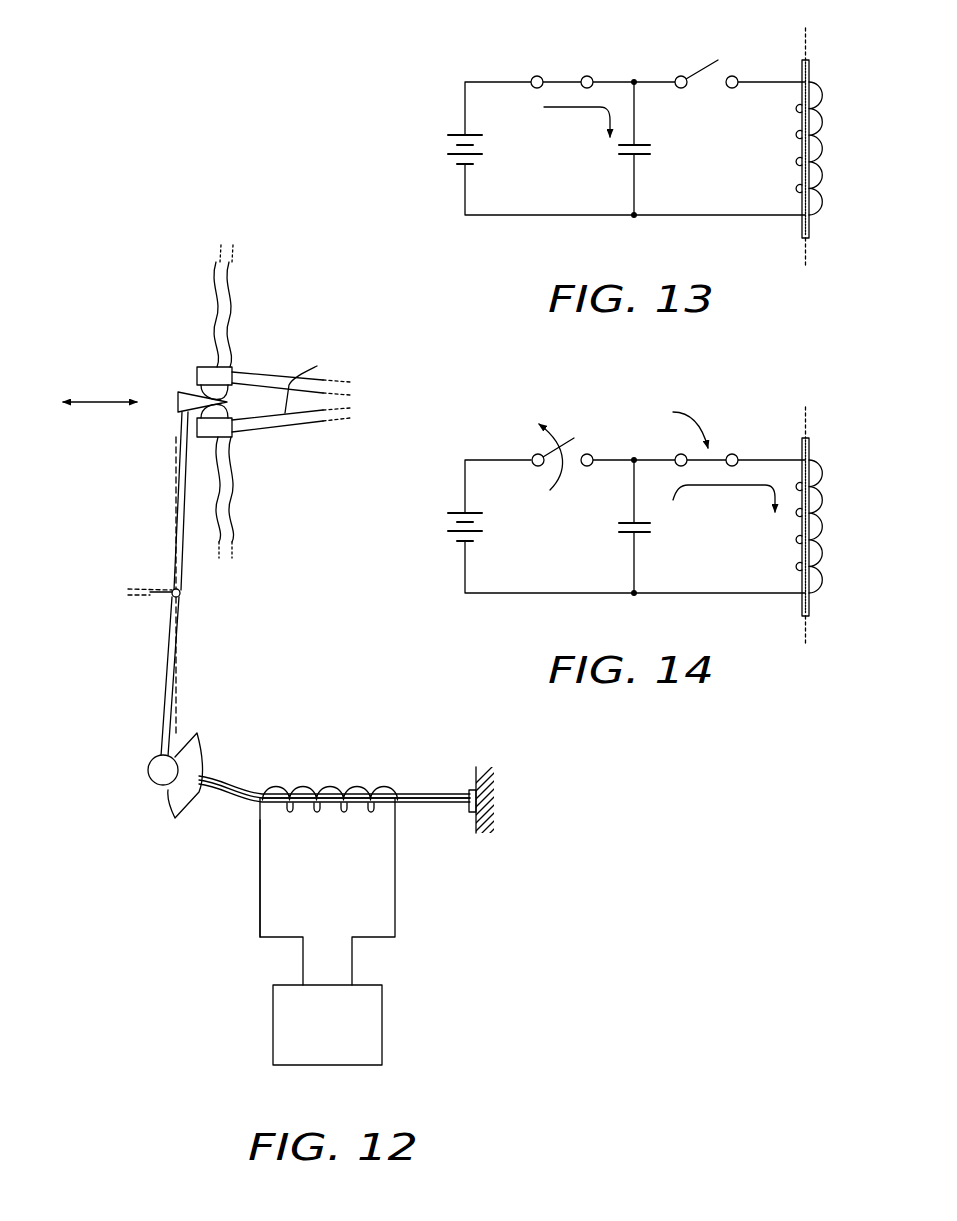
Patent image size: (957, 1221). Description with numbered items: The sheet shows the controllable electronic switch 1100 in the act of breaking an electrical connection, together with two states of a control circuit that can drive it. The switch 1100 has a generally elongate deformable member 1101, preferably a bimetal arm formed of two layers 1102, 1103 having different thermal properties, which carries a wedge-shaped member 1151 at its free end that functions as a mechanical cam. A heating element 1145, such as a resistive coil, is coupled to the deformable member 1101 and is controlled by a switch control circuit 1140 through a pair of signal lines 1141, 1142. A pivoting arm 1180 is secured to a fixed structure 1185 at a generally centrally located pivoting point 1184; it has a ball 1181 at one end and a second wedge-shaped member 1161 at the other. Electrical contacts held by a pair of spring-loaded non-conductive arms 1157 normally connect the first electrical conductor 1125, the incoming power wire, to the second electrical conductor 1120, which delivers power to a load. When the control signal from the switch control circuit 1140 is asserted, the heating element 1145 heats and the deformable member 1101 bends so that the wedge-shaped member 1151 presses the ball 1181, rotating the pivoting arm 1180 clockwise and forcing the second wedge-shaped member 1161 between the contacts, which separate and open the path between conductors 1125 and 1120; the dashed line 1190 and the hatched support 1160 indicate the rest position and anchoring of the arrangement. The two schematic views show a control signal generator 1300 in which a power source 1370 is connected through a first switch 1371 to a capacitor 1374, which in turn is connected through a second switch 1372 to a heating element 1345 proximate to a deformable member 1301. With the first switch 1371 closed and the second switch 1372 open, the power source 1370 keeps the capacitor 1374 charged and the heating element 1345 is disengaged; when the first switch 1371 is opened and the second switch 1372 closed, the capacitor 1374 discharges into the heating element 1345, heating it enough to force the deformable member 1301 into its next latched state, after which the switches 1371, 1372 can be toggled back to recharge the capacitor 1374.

In FIG. 12, the controllable electronic switch 1100 is at (303, 282).
In FIG. 12, the first electrical conductor 1125 is at (214, 292).
In FIG. 12, the second electrical conductor 1120 is at (229, 477).
In FIG. 12, the non-conductive arms 1157 is at (262, 377).
In FIG. 12, the second wedge-shaped member 1161 is at (178, 392).
In FIG. 12, the rest position line 1190 is at (175, 466).
In FIG. 12, the pivoting arm 1180 is at (182, 565).
In FIG. 12, the pivoting point 1184 is at (181, 594).
In FIG. 12, the fixed structure 1185 is at (152, 600).
In FIG. 12, the ball 1181 is at (148, 764).
In FIG. 12, the wedge-shaped member 1151 is at (171, 806).
In FIG. 12, the deformable member 1101 is at (420, 786).
In FIG. 12, the layer 1103 is at (417, 806).
In FIG. 12, the layer 1102 is at (443, 794).
In FIG. 12, the heating element 1145 is at (270, 788).
In FIG. 12, the fixed wall 1160 is at (476, 828).
In FIG. 12, the signal line 1141 is at (395, 913).
In FIG. 12, the signal line 1142 is at (260, 921).
In FIG. 12, the switch control circuit 1140 is at (382, 1026).
In FIG. 13, the control signal generator 1300 is at (481, 53).
In FIG. 14, the control signal generator 1300 is at (481, 431).
In FIG. 13, the power source 1370 is at (457, 131).
In FIG. 14, the power source 1370 is at (457, 508).
In FIG. 13, the first switch 1371 is at (560, 78).
In FIG. 14, the first switch 1371 is at (553, 436).
In FIG. 13, the second switch 1372 is at (702, 66).
In FIG. 14, the second switch 1372 is at (718, 457).
In FIG. 13, the capacitor 1374 is at (645, 160).
In FIG. 14, the capacitor 1374 is at (645, 538).
In FIG. 13, the heating element 1345 is at (818, 97).
In FIG. 14, the heating element 1345 is at (818, 474).
In FIG. 13, the deformable member 1301 is at (819, 226).
In FIG. 14, the deformable member 1301 is at (819, 604).